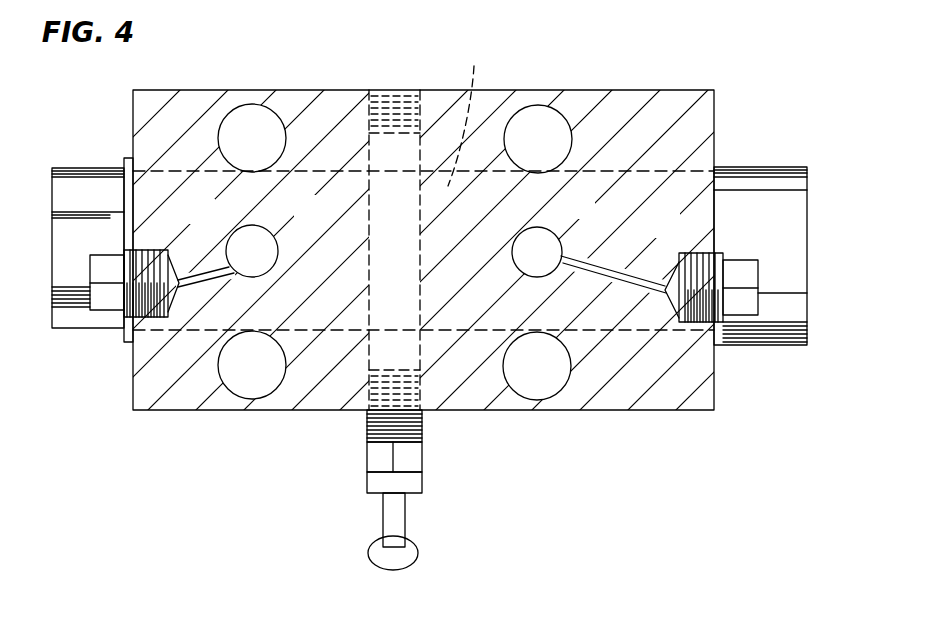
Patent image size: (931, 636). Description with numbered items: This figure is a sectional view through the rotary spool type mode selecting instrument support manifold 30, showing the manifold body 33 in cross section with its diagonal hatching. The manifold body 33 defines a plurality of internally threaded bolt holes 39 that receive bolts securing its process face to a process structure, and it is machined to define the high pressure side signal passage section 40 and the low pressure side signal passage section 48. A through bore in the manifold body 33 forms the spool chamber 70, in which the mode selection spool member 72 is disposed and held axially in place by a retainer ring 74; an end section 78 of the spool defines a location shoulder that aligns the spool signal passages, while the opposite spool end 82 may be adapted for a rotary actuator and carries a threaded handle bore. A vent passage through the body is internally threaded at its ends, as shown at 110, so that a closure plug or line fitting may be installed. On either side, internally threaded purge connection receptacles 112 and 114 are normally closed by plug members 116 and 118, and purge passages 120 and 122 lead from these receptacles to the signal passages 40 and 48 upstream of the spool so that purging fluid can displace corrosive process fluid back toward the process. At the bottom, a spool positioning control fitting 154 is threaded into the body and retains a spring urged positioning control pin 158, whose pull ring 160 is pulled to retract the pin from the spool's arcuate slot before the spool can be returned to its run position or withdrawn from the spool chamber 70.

The instrument support manifold 30 is at (465, 293).
The manifold body 33 is at (670, 112).
The internally threaded bolt holes 39 is at (253, 125).
The high pressure side signal passage section 40 is at (265, 257).
The low pressure side signal passage section 48 is at (541, 247).
The spool chamber 70 is at (470, 111).
The mode selection spool member 72 is at (741, 158).
The retainer ring 74 is at (125, 158).
The end section of the spool 78 is at (795, 217).
The spool end 82 is at (73, 182).
The internally threaded end of vent passage 110 is at (406, 91).
The purge connection receptacle 112 is at (150, 318).
The purge connection receptacle 114 is at (698, 322).
The plug member 116 is at (112, 301).
The plug member 118 is at (748, 277).
The purge passage 120 is at (208, 270).
The purge passage 122 is at (617, 262).
The spool positioning control fitting 154 is at (366, 452).
The positioning control pin 158 is at (405, 518).
The pull ring 160 is at (367, 553).